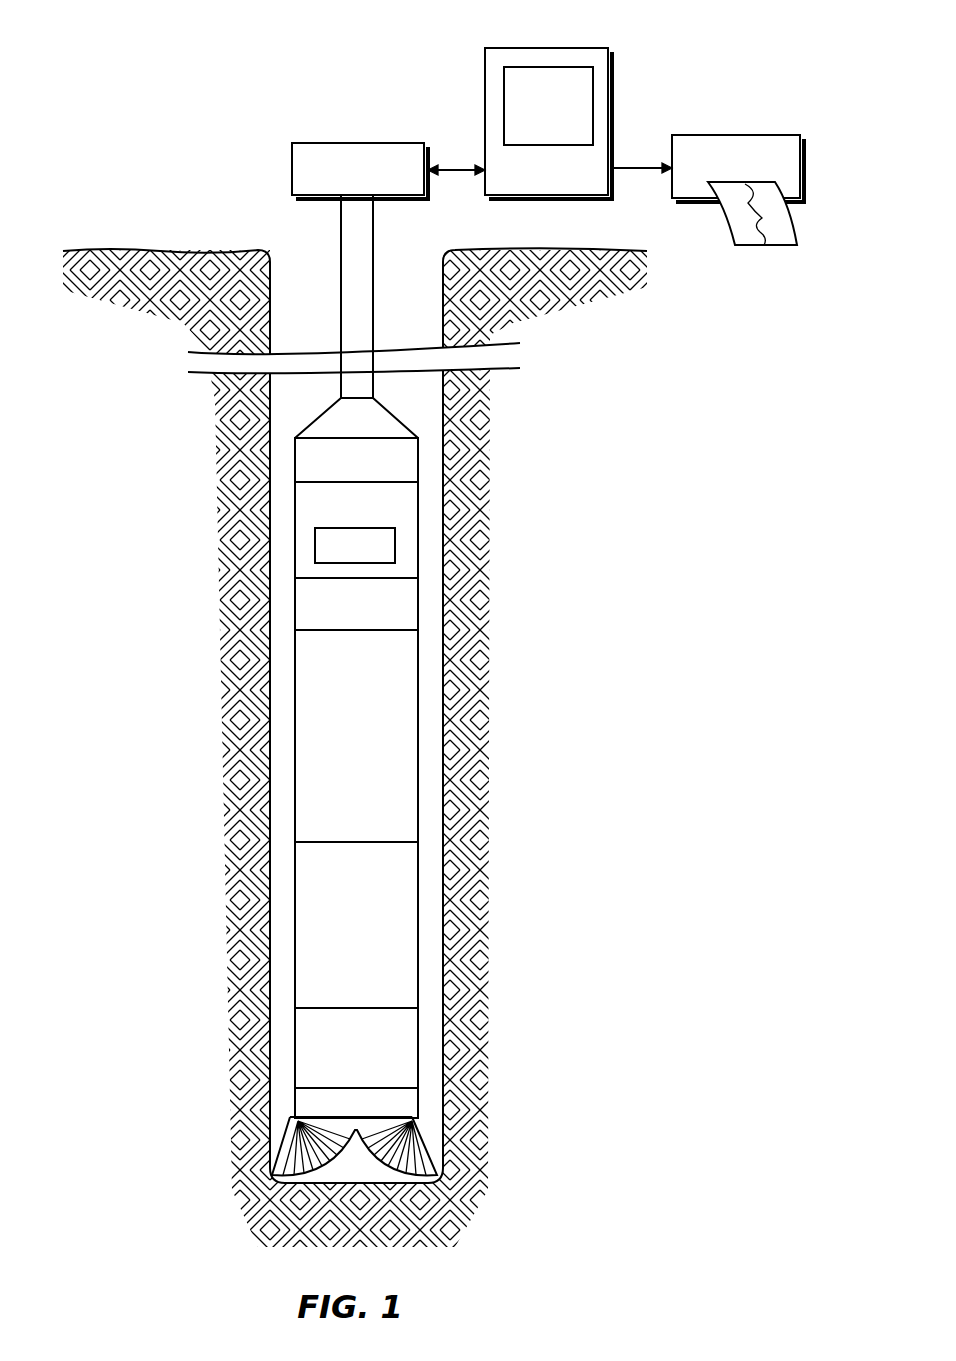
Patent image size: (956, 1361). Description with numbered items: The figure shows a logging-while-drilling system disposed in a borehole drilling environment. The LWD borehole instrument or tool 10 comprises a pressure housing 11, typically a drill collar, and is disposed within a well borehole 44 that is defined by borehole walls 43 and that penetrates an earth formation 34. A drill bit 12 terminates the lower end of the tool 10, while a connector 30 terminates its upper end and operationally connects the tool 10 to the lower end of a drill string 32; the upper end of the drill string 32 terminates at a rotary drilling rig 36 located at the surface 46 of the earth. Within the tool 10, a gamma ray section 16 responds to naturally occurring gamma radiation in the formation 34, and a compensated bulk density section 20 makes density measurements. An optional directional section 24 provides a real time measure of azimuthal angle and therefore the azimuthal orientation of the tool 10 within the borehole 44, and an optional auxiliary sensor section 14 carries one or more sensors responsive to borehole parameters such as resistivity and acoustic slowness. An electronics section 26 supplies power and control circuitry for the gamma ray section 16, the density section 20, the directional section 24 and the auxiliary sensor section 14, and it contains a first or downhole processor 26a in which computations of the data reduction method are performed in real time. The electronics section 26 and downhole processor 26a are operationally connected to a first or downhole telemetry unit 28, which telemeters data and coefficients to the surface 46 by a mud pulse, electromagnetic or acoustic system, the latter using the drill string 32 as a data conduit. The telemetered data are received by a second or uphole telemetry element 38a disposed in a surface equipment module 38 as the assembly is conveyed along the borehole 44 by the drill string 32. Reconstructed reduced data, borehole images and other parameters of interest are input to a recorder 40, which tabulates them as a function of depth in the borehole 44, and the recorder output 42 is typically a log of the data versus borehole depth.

The LWD borehole instrument 10 is at (360, 781).
The pressure housing 11 is at (295, 925).
The drill bit 12 is at (282, 1145).
The auxiliary sensor section 14 is at (290, 1048).
The gamma ray section 16 is at (405, 982).
The compensated bulk density section 20 is at (405, 803).
The directional section 24 is at (305, 608).
The electronics section 26 is at (360, 530).
The downhole processor 26a is at (395, 545).
The downhole telemetry unit 28 is at (295, 460).
The connector 30 is at (395, 418).
The drill string 32 is at (340, 240).
The earth formation 34 is at (199, 302).
The rotary drilling rig 36 is at (383, 143).
The surface equipment module 38 is at (543, 104).
The uphole telemetry element 38a is at (520, 66).
The recorder 40 is at (755, 135).
The recorder output 42 is at (748, 247).
The borehole walls 43 is at (446, 590).
The well borehole 44 is at (298, 393).
The surface of the earth 46 is at (160, 250).